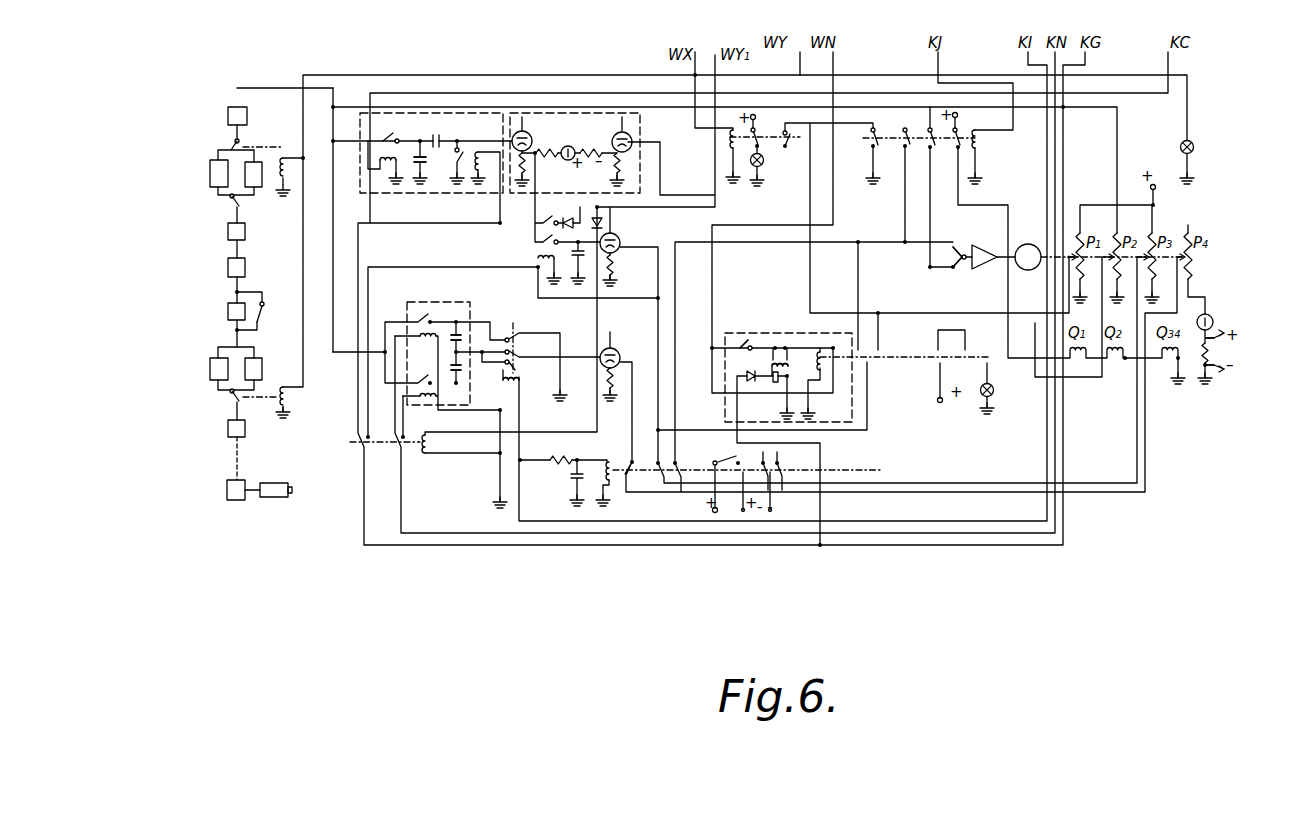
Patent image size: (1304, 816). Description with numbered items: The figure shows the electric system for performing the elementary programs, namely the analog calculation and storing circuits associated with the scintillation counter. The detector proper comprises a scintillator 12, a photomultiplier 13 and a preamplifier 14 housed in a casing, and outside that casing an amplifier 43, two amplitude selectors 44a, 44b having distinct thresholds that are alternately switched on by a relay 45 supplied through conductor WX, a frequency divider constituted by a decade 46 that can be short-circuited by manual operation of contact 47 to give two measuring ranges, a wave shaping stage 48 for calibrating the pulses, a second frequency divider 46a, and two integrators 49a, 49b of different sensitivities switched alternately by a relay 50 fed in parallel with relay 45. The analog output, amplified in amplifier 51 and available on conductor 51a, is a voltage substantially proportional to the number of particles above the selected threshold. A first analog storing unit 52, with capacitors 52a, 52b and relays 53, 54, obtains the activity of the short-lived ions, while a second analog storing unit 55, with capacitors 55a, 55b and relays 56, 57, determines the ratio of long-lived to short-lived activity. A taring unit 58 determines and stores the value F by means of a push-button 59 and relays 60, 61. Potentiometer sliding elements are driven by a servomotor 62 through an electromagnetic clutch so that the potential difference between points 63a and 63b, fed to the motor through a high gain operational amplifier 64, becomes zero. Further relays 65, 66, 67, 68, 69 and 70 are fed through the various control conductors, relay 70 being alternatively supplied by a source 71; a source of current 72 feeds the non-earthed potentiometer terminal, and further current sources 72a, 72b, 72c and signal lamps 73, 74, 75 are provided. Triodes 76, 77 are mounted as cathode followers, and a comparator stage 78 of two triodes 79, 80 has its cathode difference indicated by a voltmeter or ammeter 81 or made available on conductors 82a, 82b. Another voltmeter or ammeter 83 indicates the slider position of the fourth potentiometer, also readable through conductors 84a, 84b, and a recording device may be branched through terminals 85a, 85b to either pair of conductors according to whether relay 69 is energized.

The scintillator 12 is at (293, 488).
The photomultiplier 13 is at (274, 483).
The preamplifier 14 is at (237, 500).
The amplifier 43 is at (228, 427).
The amplitude selector 44a is at (210, 368).
The amplitude selector 44b is at (260, 360).
The relay 45 is at (288, 398).
The decade 46 is at (228, 309).
The second frequency divider 46a is at (228, 233).
The contact 47 is at (264, 310).
The wave shaping stage 48 is at (247, 267).
The integrator 49a is at (210, 174).
The integrator 49b is at (258, 187).
The relay 50 is at (294, 157).
The amplifier 51 is at (247, 116).
The conductor 51a is at (262, 84).
The first analog storing unit 52 is at (395, 195).
The capacitor 52a is at (426, 162).
The capacitor 52b is at (447, 131).
The relay 53 is at (388, 139).
The relay 54 is at (490, 164).
The second analog storing unit 55 is at (472, 307).
The capacitor 55a is at (461, 369).
The capacitor 55b is at (450, 321).
The relay 56 is at (418, 320).
The relay 57 is at (427, 378).
The taring unit 58 is at (750, 345).
The push-button 59 is at (743, 343).
The relay 60 is at (782, 345).
The relay 61 is at (821, 373).
The servomotor 62 is at (1028, 244).
The point 63a is at (959, 248).
The point 63b is at (960, 268).
The operational amplifier 64 is at (984, 247).
The relay 65 is at (979, 138).
The relay 66 is at (729, 138).
The relay 67 is at (425, 457).
The relay 68 is at (520, 376).
The relay 69 is at (609, 483).
The relay 70 is at (538, 256).
The source 71 is at (939, 410).
The source of current 72 is at (1164, 179).
The current source 72a is at (697, 512).
The current source 72b is at (958, 115).
The current source 72c is at (756, 118).
The signal lamp 73 is at (1192, 143).
The signal lamp 74 is at (765, 160).
The signal lamp 75 is at (995, 390).
The triode 76 is at (621, 238).
The triode 77 is at (619, 353).
The comparator stage 78 is at (640, 131).
The triode 79 is at (526, 134).
The triode 80 is at (614, 134).
The voltmeter or ammeter 81 is at (549, 158).
The conductor 82a is at (745, 457).
The conductor 82b is at (787, 460).
The voltmeter or ammeter 83 is at (1211, 317).
The conductor 84a is at (725, 459).
The conductor 84b is at (782, 470).
The terminal 85a is at (734, 513).
The terminal 85b is at (774, 510).